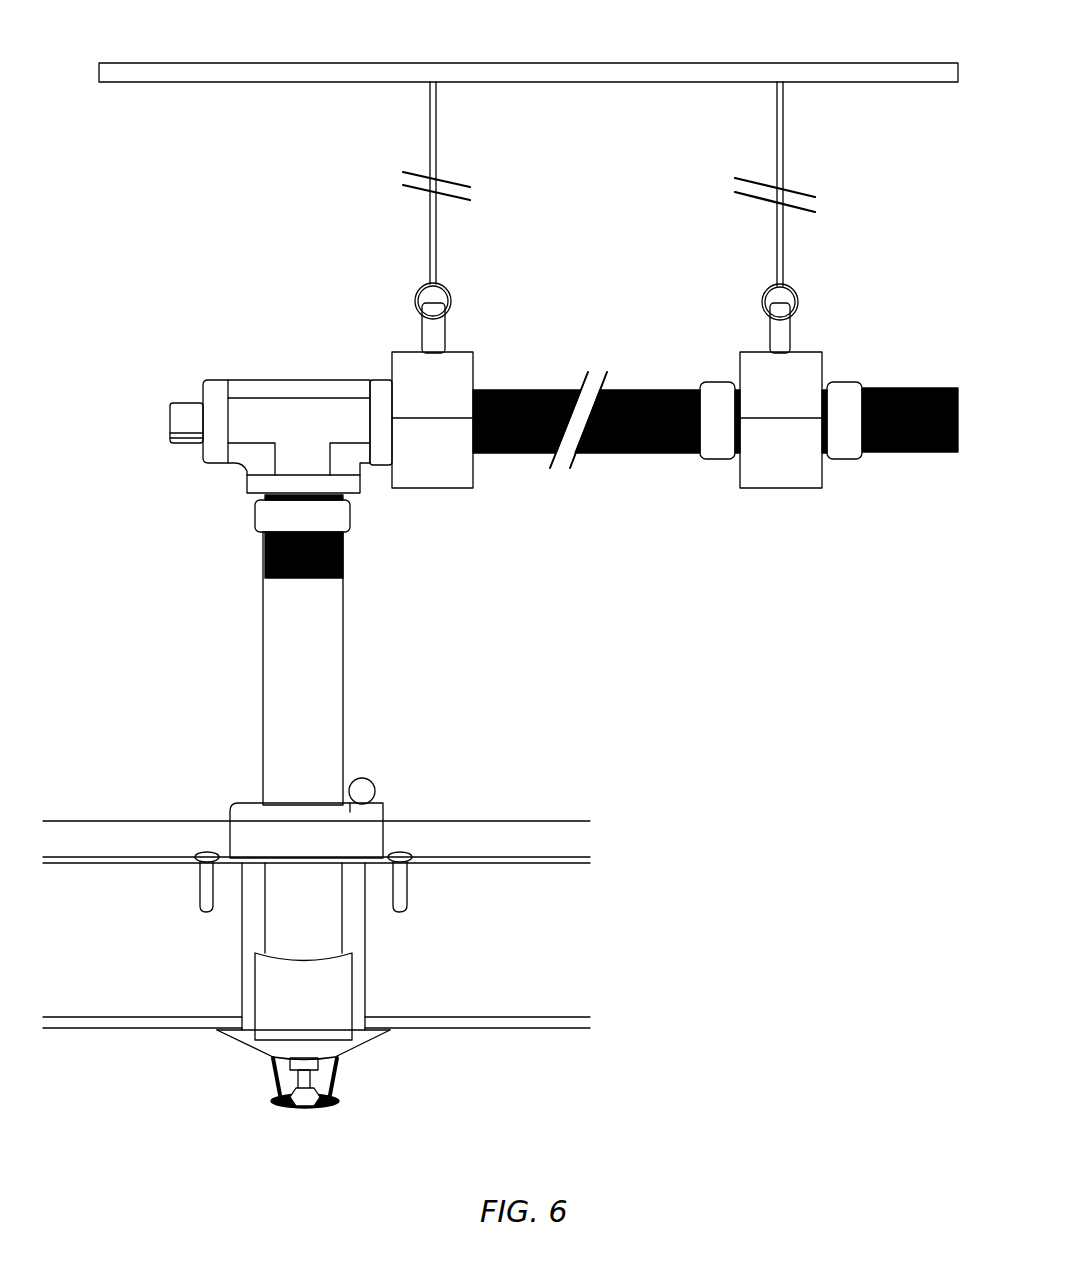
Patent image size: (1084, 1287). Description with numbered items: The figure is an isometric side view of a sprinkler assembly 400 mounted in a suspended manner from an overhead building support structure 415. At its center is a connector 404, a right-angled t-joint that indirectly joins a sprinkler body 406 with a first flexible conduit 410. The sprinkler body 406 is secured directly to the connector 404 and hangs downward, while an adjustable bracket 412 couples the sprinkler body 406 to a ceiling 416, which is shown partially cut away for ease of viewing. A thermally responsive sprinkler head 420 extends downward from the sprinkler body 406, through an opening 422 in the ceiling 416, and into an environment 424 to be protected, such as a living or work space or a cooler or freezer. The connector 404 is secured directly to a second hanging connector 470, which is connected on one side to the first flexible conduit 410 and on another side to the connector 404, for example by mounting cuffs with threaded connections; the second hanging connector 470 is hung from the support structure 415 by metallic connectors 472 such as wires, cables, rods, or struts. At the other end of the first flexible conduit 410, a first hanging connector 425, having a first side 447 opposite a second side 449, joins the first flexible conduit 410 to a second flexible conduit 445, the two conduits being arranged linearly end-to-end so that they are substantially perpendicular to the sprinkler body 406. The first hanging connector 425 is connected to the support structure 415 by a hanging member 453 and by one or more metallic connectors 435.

The sprinkler assembly 400 is at (197, 178).
The connector 404 is at (300, 366).
The sprinkler body 406 is at (334, 612).
The first flexible conduit 410 is at (485, 389).
The adjustable bracket 412 is at (387, 796).
The support structure 415 is at (347, 63).
The ceiling 416 is at (485, 934).
The thermally responsive sprinkler head 420 is at (256, 1084).
The opening 422 is at (253, 915).
The environment 424 is at (454, 1067).
The first hanging connector 425 is at (826, 332).
The metallic connectors 435 is at (776, 146).
The second flexible conduit 445 is at (899, 388).
The first side 447 is at (740, 365).
The second side 449 is at (825, 471).
The hanging member 453 is at (770, 329).
The second hanging connector 470 is at (463, 329).
The metallic connectors 472 is at (429, 140).